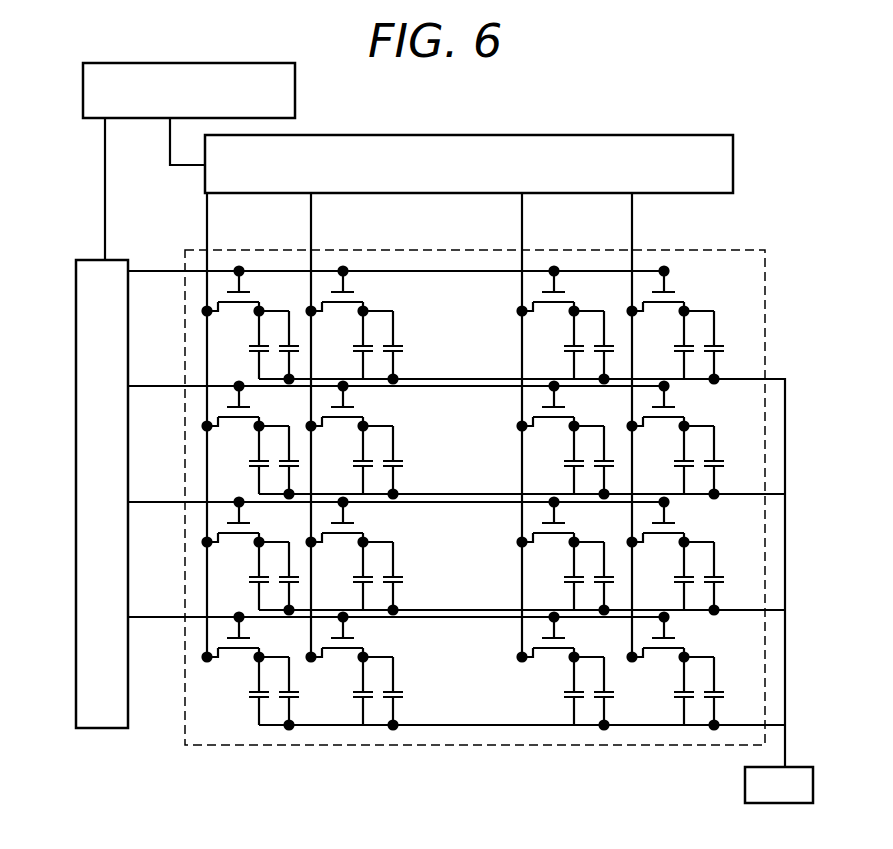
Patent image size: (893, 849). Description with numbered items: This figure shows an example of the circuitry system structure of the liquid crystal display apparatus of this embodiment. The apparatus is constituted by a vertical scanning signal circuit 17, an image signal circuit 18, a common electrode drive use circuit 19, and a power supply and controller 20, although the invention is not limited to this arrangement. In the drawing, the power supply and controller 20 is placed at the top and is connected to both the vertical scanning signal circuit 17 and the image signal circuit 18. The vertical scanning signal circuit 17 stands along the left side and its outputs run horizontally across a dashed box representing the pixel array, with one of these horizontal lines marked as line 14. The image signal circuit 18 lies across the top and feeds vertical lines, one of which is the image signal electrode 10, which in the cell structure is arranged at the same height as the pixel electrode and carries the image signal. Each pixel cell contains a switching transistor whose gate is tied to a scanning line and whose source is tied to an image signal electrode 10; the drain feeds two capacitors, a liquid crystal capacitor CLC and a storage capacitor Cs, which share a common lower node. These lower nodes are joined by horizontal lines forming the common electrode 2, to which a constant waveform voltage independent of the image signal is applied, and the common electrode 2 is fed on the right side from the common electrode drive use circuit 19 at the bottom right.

The common electrode 2 is at (764, 381).
The image signal electrode 10 is at (632, 236).
The gate line 14 is at (147, 619).
The vertical scanning signal circuit 17 is at (83, 539).
The image signal circuit 18 is at (553, 135).
The common electrode drive use circuit 19 is at (800, 767).
The power supply and controller 20 is at (184, 73).
The liquid crystal capacitor CLC is at (365, 455).
The storage capacitor Cs is at (402, 468).